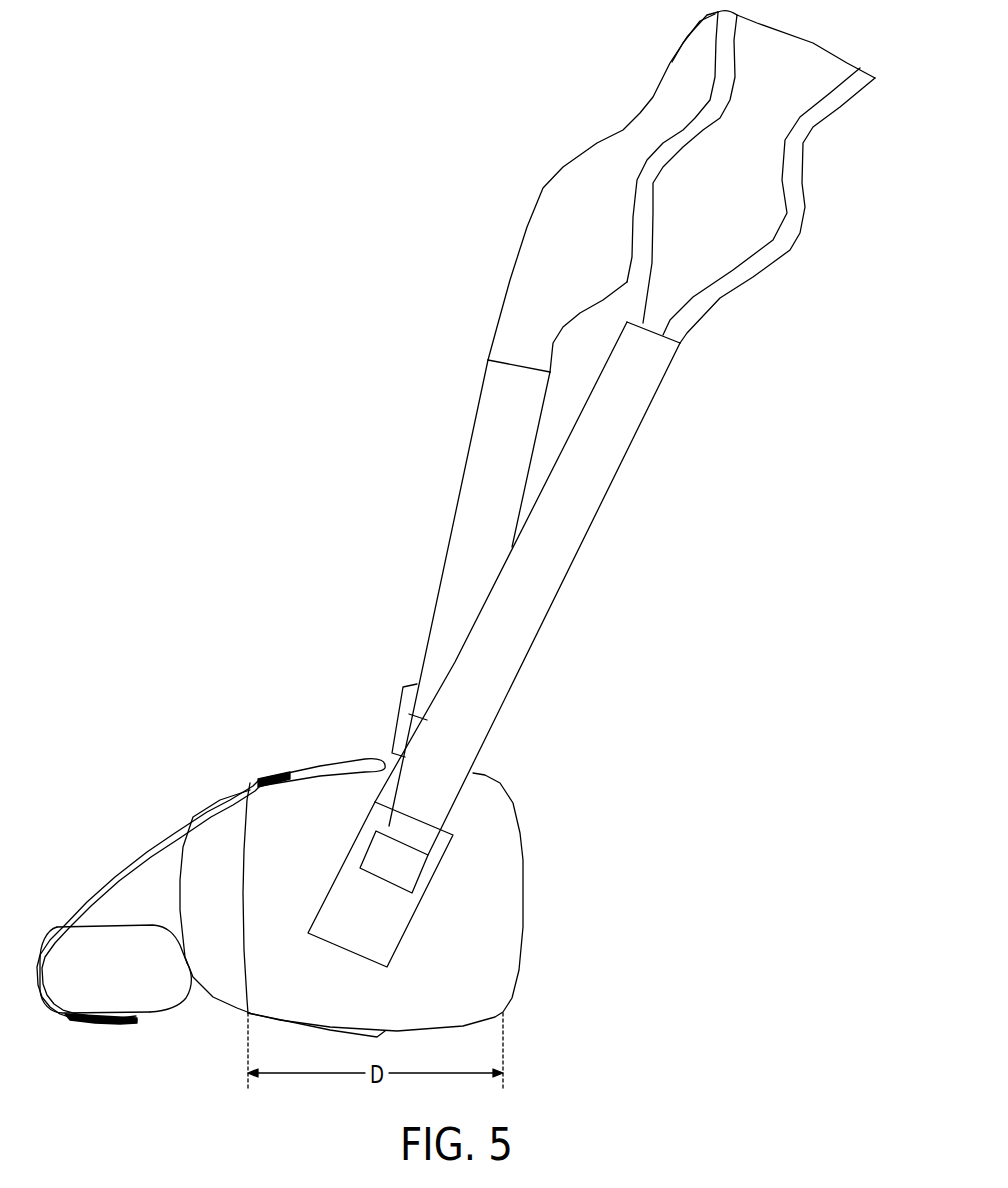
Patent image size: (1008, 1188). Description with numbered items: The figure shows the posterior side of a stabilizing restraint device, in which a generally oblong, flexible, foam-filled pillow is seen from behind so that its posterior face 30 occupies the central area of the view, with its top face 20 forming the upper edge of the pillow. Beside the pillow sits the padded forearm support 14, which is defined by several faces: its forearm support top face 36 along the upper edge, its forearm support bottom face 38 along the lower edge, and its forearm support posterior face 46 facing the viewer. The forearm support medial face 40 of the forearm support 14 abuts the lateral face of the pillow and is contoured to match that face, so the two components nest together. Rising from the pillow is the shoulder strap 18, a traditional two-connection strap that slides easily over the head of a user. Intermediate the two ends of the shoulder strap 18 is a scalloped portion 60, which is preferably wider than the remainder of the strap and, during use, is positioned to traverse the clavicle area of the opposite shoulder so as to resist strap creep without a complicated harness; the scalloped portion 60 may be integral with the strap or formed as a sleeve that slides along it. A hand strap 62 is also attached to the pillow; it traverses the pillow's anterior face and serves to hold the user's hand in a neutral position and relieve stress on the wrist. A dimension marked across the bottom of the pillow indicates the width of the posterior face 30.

The padded forearm support 14 is at (65, 1030).
The shoulder strap 18 is at (597, 523).
The top face 20 is at (362, 767).
The posterior face 30 is at (482, 939).
The forearm support top face 36 is at (125, 925).
The forearm support bottom face 38 is at (150, 1024).
The forearm support medial face 40 is at (183, 970).
The forearm support posterior face 46 is at (124, 980).
The scalloped portion 60 is at (822, 148).
The hand strap 62 is at (327, 760).